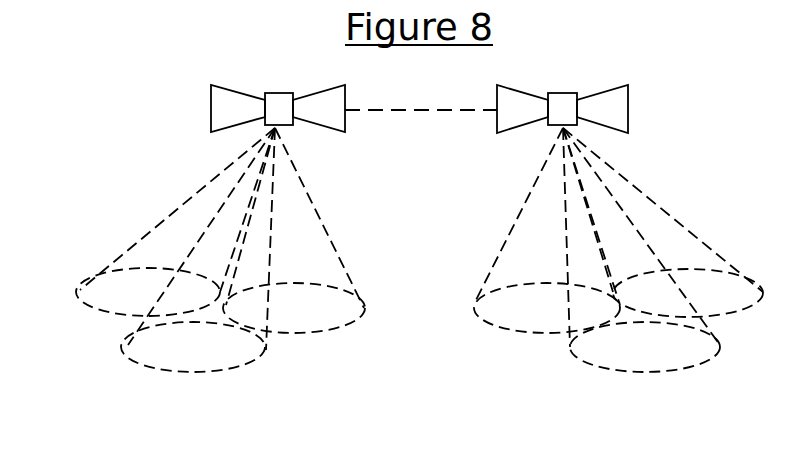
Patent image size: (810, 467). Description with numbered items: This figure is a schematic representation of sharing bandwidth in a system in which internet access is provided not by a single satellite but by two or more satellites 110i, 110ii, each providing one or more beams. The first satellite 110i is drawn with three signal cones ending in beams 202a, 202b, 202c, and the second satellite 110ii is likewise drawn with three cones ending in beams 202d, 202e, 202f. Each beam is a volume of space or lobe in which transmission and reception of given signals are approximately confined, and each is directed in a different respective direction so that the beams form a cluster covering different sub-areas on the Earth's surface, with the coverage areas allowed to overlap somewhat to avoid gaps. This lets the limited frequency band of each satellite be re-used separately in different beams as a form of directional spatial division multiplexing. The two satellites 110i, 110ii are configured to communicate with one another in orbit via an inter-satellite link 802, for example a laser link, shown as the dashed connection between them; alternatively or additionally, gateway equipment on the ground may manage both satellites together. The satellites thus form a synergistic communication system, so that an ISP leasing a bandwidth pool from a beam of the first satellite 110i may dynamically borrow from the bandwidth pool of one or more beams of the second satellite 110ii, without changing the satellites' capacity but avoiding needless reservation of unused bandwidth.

The satellite 110i is at (211, 108).
The satellite 110ii is at (628, 110).
The inter-satellite link 802 is at (437, 110).
The beam 202a is at (312, 333).
The beam 202b is at (185, 373).
The beam 202c is at (95, 318).
The beam 202d is at (753, 315).
The beam 202e is at (640, 373).
The beam 202f is at (540, 333).